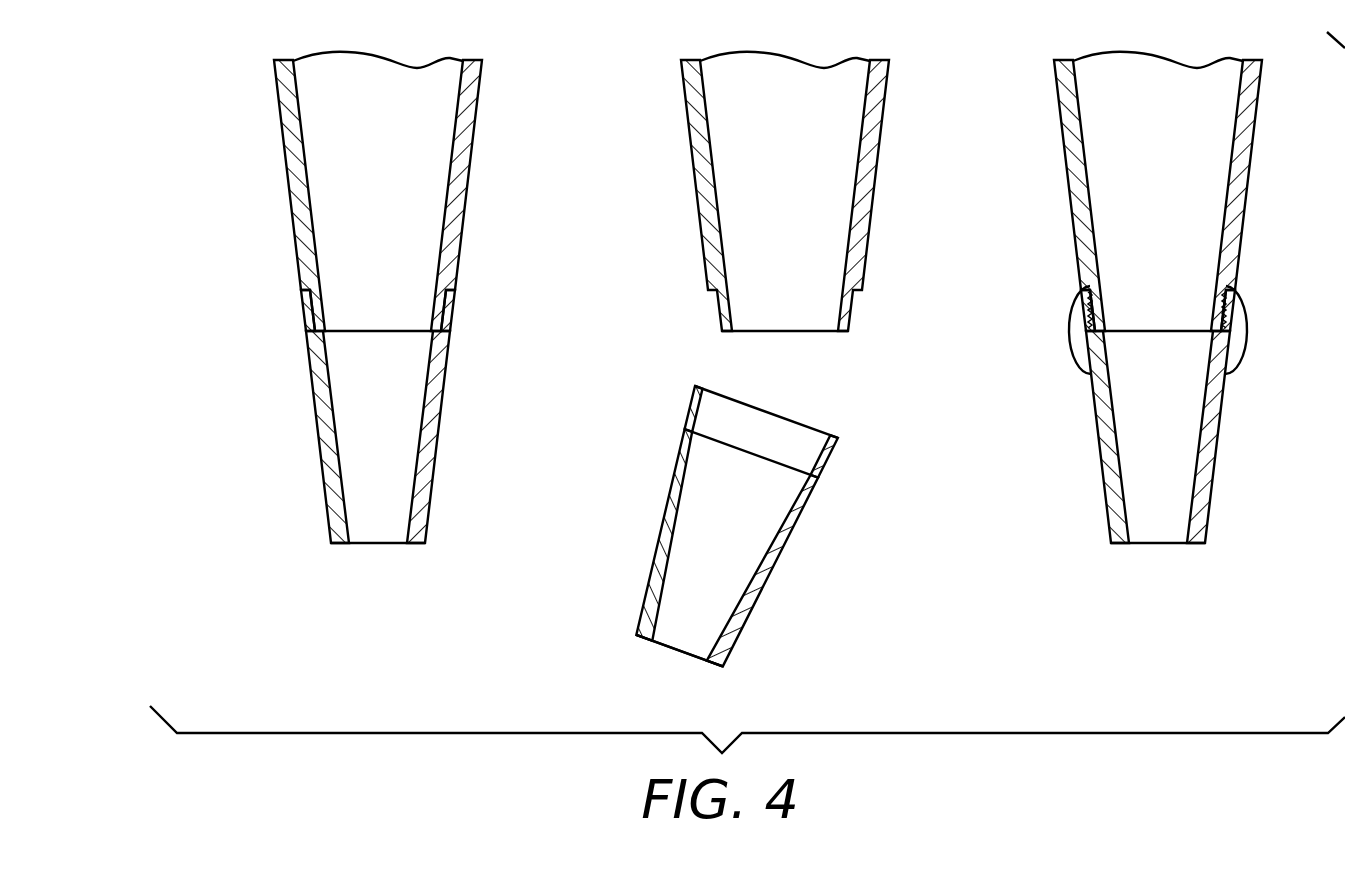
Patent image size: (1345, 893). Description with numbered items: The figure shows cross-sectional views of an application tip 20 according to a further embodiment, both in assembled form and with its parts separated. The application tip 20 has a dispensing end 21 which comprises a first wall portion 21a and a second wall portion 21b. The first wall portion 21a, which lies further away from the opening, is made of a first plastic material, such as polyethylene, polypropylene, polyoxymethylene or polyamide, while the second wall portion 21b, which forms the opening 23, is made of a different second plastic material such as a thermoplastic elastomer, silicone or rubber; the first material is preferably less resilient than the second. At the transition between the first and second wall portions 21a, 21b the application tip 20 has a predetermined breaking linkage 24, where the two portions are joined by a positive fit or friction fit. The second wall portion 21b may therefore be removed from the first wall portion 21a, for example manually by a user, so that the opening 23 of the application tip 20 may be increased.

The application tip 20 is at (200, 72).
The dispensing end 21 is at (208, 250).
The first wall portion 21a is at (305, 272).
The second wall portion 21b is at (326, 449).
The opening 23 is at (384, 545).
The predetermined breaking linkage 24 is at (450, 298).